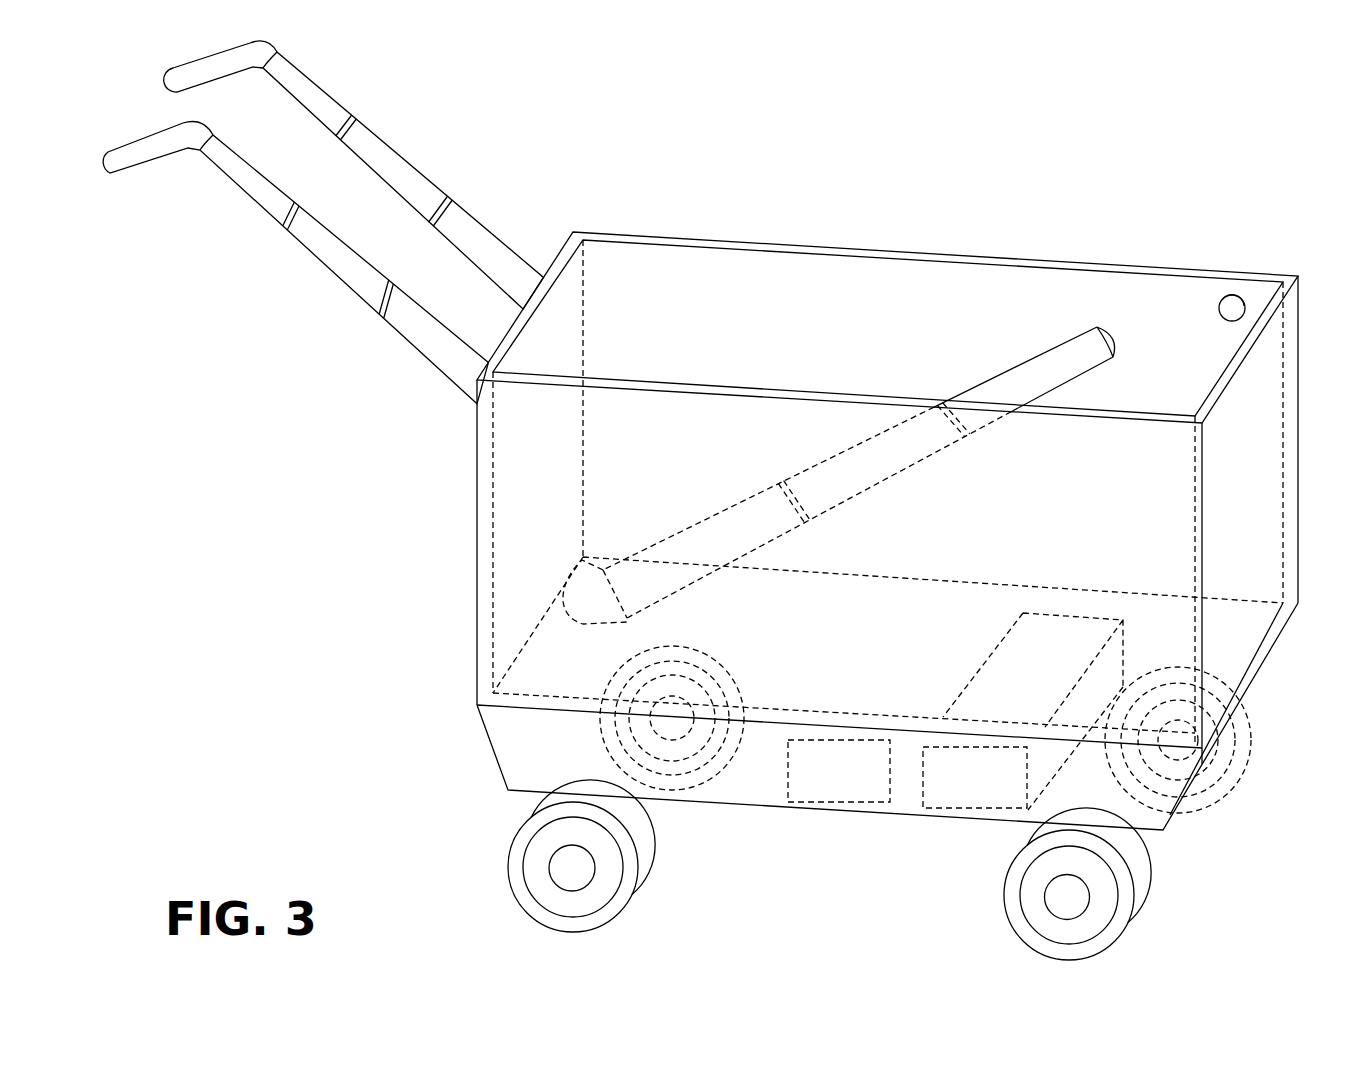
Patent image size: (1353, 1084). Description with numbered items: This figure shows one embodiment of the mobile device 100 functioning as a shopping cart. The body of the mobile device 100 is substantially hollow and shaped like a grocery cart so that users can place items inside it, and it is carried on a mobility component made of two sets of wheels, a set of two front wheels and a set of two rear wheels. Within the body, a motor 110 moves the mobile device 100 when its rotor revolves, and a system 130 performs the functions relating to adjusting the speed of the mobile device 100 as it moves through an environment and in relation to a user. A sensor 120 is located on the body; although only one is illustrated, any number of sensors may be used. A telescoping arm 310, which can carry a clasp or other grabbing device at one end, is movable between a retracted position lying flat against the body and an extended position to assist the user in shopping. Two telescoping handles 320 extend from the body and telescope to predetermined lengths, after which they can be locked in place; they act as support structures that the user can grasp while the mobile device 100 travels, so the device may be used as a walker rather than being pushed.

The mobile device 100 is at (1060, 260).
The motor 110 is at (1023, 711).
The sensor 120 is at (1228, 300).
The system 130 is at (839, 771).
The telescoping arm 310 is at (1025, 378).
The telescoping handle 320 is at (425, 190).